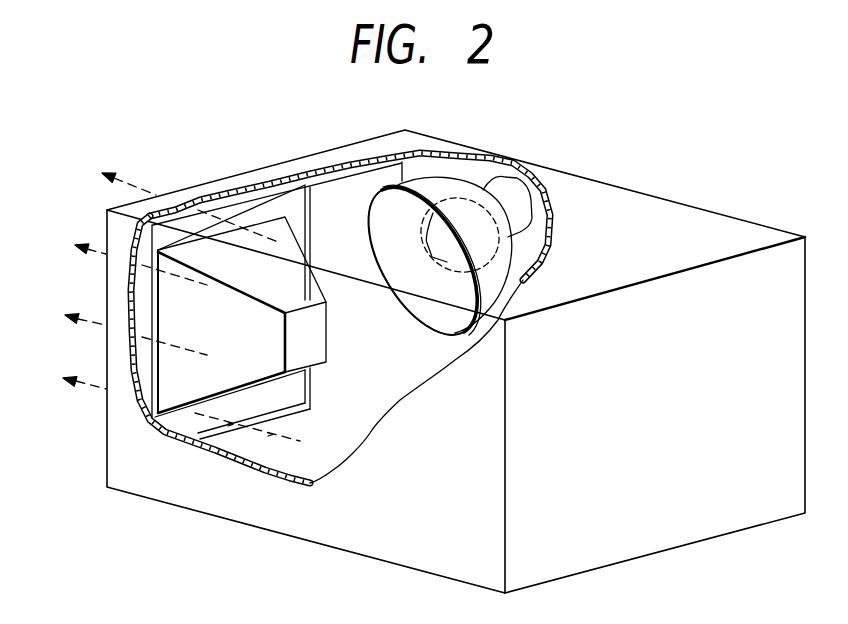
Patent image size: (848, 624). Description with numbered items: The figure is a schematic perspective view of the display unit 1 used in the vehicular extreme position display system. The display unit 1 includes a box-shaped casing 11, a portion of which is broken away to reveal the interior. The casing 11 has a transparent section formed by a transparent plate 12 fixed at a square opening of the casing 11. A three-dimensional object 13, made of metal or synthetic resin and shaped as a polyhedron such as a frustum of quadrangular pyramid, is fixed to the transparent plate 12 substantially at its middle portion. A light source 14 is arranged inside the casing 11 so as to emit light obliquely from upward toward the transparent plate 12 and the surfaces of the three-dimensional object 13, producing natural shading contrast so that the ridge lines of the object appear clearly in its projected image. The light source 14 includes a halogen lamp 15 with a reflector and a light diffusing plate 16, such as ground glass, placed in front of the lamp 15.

The display unit 1 is at (650, 186).
The casing 11 is at (761, 272).
The transparent plate 12 is at (290, 393).
The three-dimensional object 13 is at (315, 323).
The light source 14 is at (460, 186).
The halogen lamp 15 is at (500, 256).
The light diffusing plate 16 is at (452, 317).